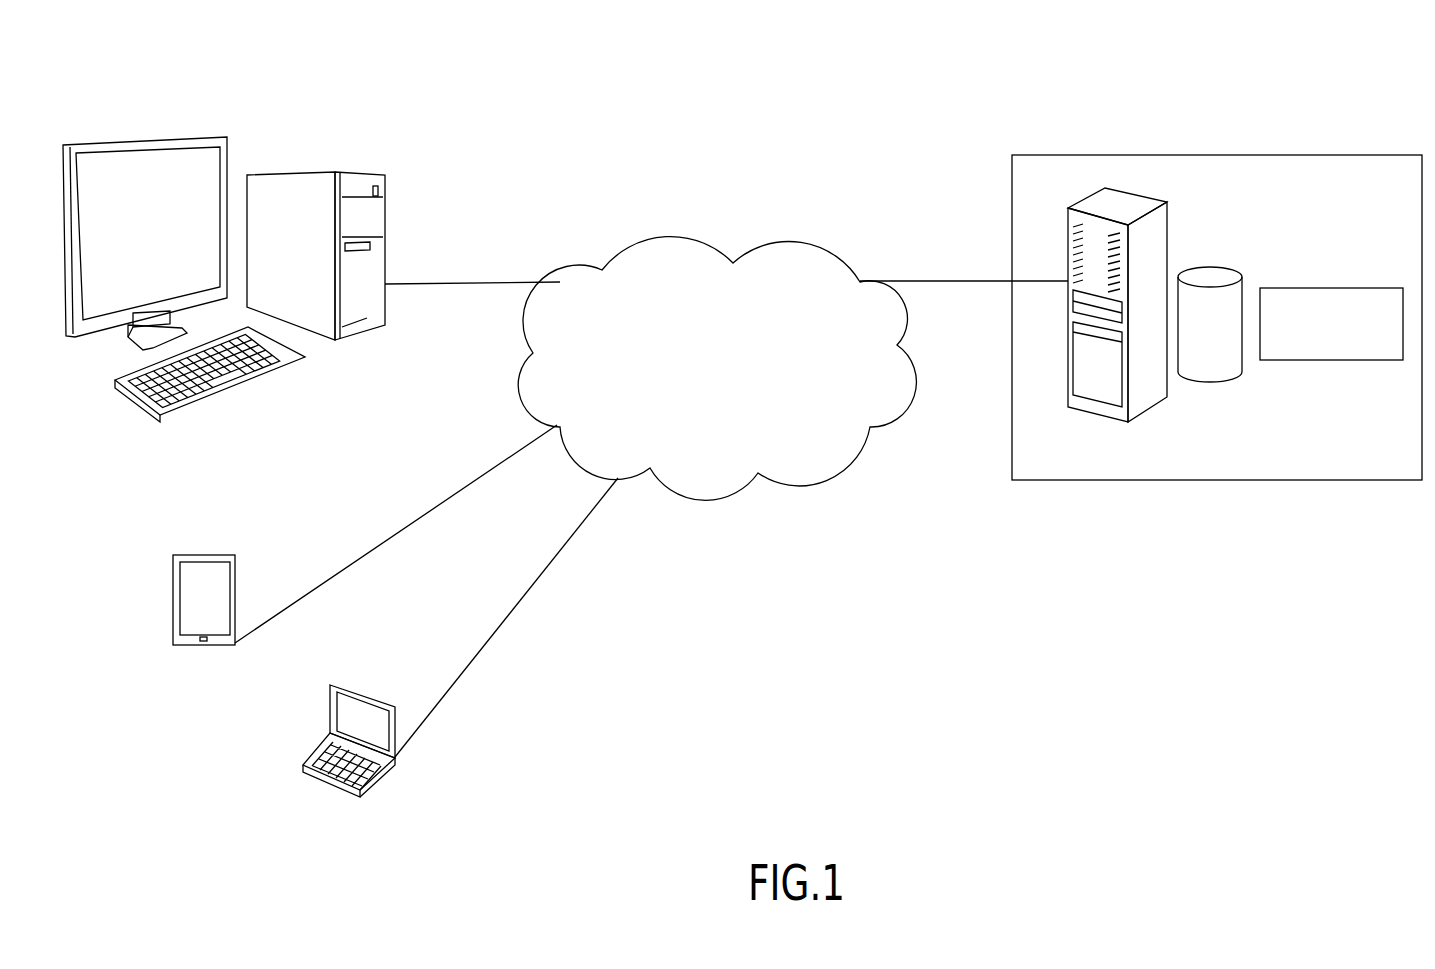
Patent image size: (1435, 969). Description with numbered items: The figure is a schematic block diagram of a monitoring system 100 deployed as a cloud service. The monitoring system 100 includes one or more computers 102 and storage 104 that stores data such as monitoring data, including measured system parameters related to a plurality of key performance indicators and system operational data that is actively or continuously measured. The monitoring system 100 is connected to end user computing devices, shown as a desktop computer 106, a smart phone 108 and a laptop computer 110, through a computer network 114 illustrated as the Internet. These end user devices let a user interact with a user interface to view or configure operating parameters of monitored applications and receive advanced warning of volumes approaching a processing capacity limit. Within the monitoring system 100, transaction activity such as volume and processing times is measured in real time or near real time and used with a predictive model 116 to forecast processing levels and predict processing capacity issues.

The monitoring system 100 is at (1185, 84).
The computers 102 is at (1142, 202).
The storage 104 is at (1205, 267).
The desktop computer 106 is at (148, 86).
The smart phone 108 is at (215, 553).
The laptop computer 110 is at (368, 697).
The computer network 114 is at (747, 139).
The predictive model 116 is at (1313, 360).